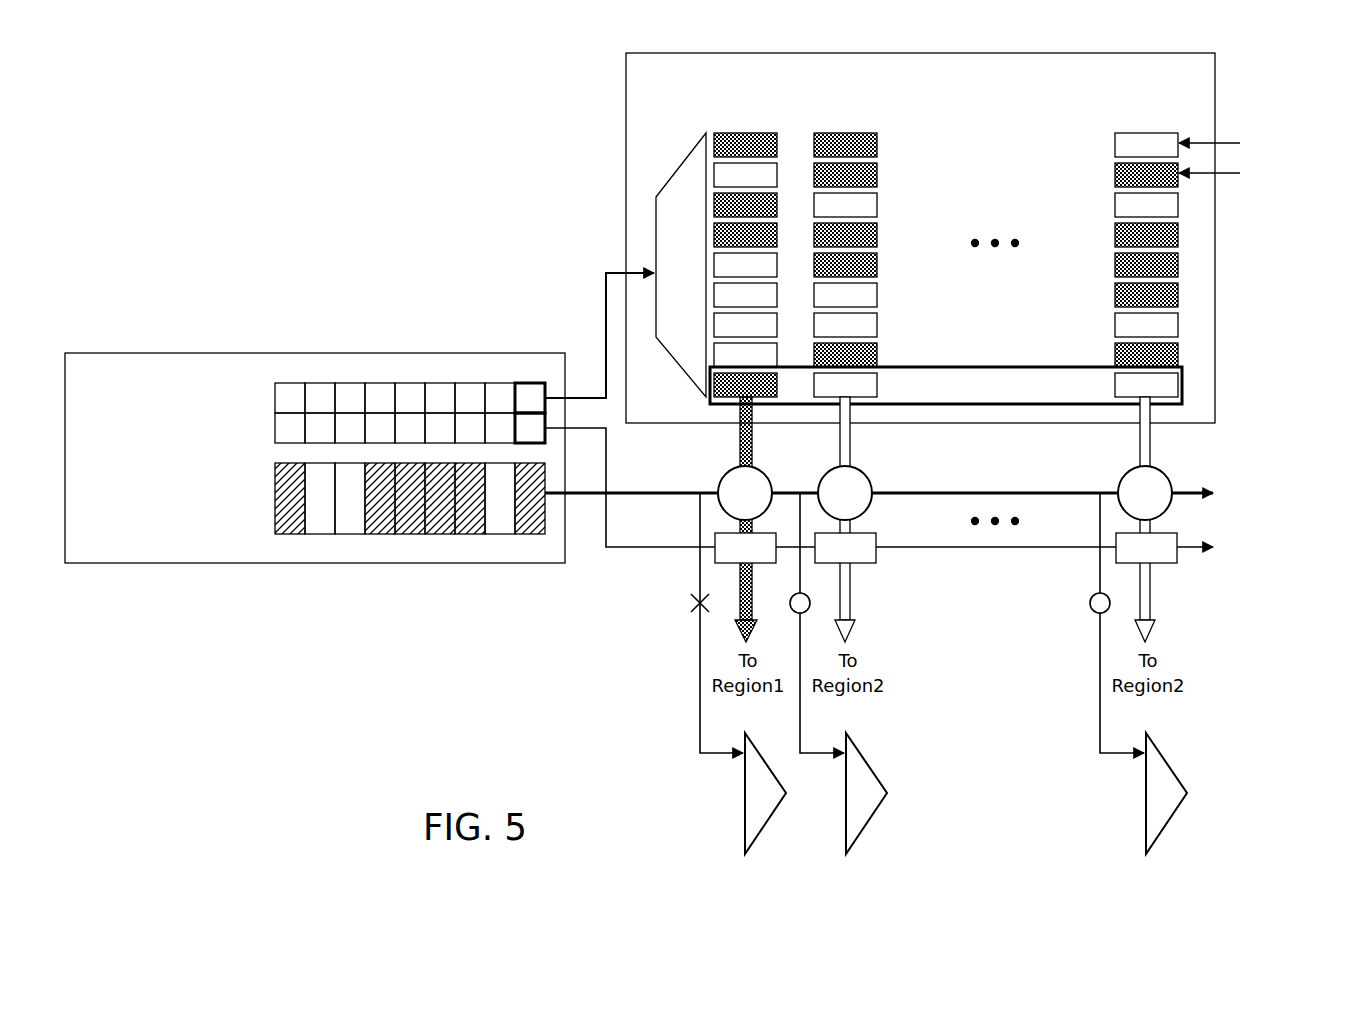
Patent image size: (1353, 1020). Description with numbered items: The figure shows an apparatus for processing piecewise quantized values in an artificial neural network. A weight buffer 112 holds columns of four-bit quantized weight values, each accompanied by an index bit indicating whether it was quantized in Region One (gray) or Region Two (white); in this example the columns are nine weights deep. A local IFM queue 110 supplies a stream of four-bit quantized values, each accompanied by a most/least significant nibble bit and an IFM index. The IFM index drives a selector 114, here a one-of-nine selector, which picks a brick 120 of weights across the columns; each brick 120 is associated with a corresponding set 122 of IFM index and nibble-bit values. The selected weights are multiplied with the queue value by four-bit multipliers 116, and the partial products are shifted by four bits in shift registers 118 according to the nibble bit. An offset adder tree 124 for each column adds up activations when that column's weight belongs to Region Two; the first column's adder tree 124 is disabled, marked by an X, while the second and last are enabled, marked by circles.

The local input feature map (IFM) queue 110 is at (467, 353).
The weight buffer 112 is at (626, 90).
The selector 114 is at (682, 157).
The 4-bit multipliers 116 is at (722, 476).
The shift registers 118 is at (876, 565).
The brick of weights 120 is at (997, 367).
The set of values of the IFM index and nibble bit 122 is at (531, 383).
The offset adder tree 124 is at (760, 833).